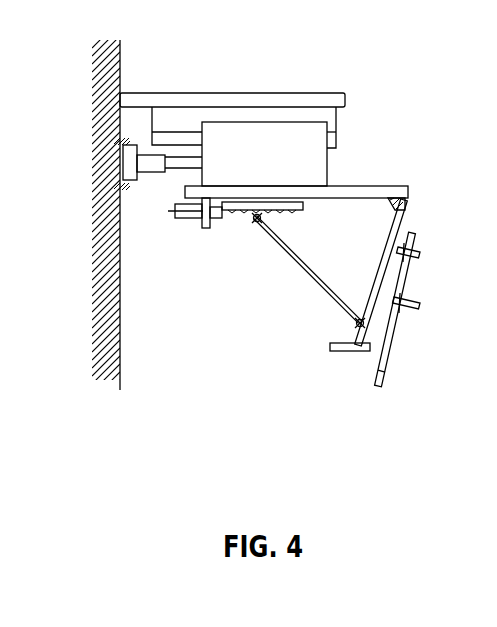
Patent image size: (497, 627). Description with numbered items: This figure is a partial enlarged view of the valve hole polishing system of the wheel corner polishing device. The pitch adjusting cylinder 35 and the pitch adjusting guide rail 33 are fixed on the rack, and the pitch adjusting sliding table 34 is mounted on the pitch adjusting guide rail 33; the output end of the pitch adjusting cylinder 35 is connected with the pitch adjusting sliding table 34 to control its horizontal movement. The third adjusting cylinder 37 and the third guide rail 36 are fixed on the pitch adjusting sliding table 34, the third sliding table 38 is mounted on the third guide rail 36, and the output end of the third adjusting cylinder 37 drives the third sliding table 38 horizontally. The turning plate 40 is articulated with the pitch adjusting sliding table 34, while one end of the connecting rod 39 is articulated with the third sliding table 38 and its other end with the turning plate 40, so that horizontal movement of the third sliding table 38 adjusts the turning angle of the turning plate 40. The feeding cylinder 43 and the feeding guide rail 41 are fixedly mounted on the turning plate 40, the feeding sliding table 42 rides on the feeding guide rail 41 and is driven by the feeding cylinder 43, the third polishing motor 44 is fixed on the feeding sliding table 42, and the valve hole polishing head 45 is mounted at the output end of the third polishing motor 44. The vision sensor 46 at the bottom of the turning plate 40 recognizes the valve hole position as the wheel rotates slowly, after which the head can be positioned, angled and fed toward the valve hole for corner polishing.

The pitch adjusting guide rail 33 is at (232, 91).
The pitch adjusting sliding table 34 is at (264, 111).
The pitch adjusting cylinder 35 is at (114, 133).
The third guide rail 36 is at (296, 219).
The third adjusting cylinder 37 is at (164, 229).
The third sliding table 38 is at (234, 236).
The connecting rod 39 is at (219, 258).
The turning plate 40 is at (402, 272).
The feeding guide rail 41 is at (302, 270).
The feeding sliding table 42 is at (299, 337).
The feeding cylinder 43 is at (429, 248).
The third polishing motor 44 is at (427, 300).
The valve hole polishing head 45 is at (417, 309).
The vision sensor 46 is at (301, 369).